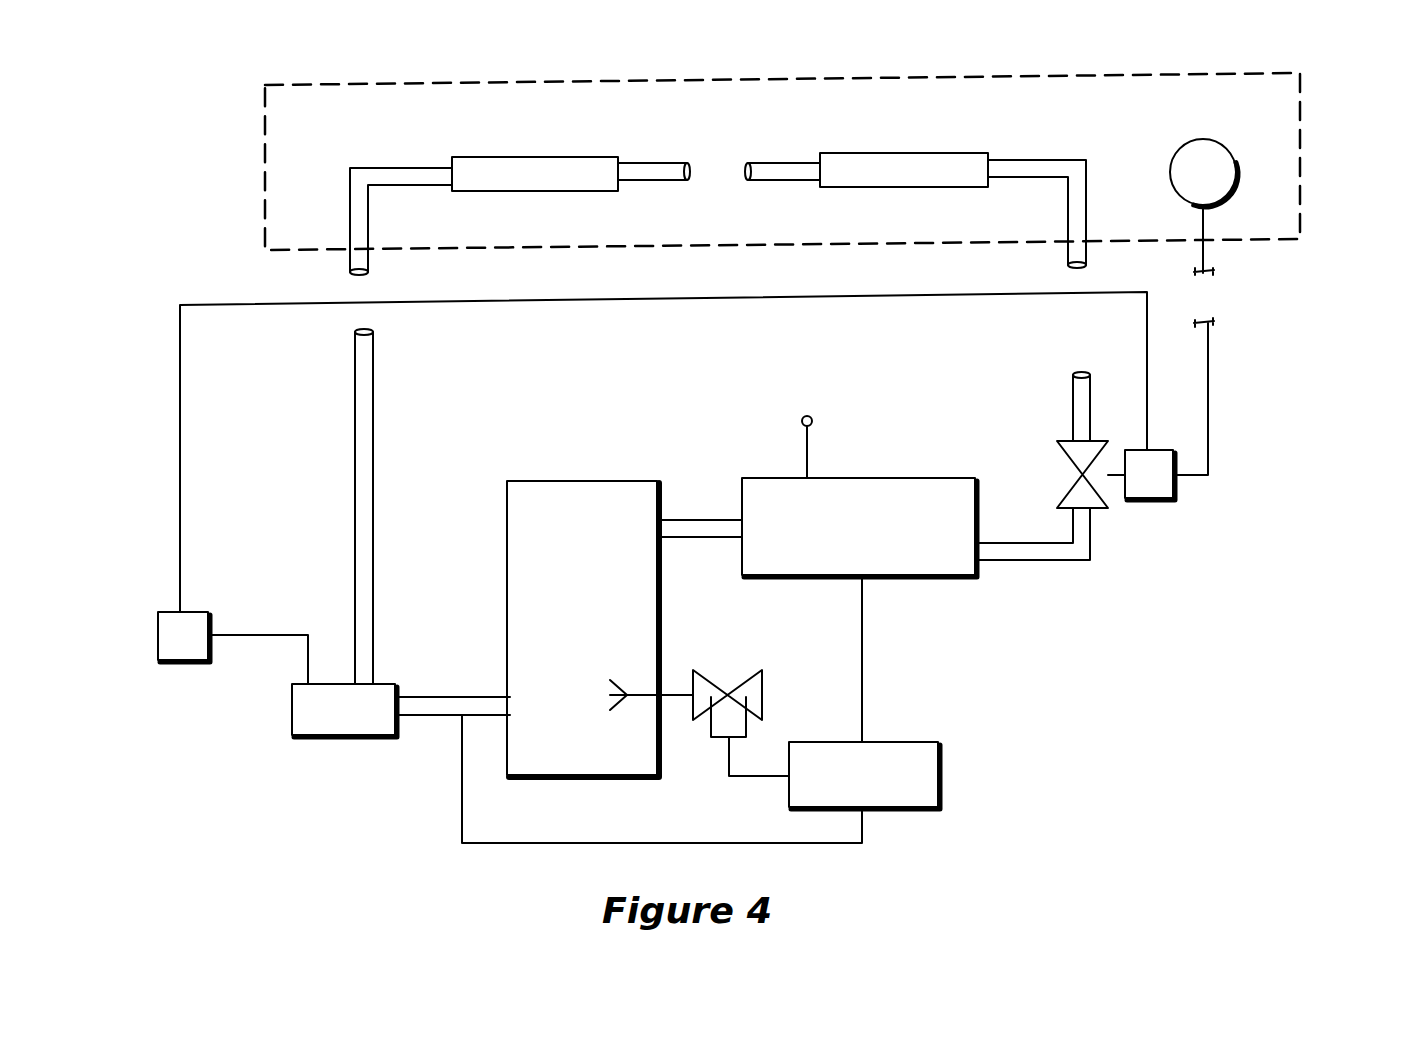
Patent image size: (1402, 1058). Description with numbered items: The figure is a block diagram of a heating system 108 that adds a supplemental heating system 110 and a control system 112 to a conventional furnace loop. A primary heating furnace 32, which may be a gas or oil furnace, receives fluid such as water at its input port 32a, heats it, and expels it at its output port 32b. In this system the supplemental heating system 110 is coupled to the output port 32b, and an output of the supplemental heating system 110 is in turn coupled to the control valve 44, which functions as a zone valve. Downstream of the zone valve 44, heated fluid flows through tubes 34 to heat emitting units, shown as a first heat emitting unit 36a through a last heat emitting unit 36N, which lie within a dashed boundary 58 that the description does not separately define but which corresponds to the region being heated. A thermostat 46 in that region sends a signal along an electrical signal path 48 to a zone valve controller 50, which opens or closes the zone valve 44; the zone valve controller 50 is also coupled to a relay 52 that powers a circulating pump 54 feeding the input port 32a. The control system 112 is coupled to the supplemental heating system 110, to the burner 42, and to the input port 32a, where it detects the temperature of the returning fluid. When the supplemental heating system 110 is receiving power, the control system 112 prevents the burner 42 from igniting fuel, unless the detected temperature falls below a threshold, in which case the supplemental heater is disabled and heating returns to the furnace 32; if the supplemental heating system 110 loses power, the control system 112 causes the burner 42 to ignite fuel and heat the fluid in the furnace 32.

The heating system 108 is at (621, 397).
The heated region enclosure 58 is at (1305, 128).
The tubes 34 is at (420, 167).
The heat emitting unit 36N is at (507, 155).
The heat emitting unit 36a is at (870, 152).
The thermostat 46 is at (1203, 138).
The electrical signal path 48 is at (1205, 224).
The zone valve controller 50 is at (1160, 450).
The zone valve 44 is at (1068, 457).
The primary heating furnace 32 is at (615, 478).
The input port 32a is at (492, 695).
The output port 32b is at (699, 518).
The burner 42 is at (750, 680).
The supplemental heating system 110 is at (858, 475).
The control system 112 is at (948, 768).
The relay 52 is at (197, 612).
The circulating pump 54 is at (290, 705).